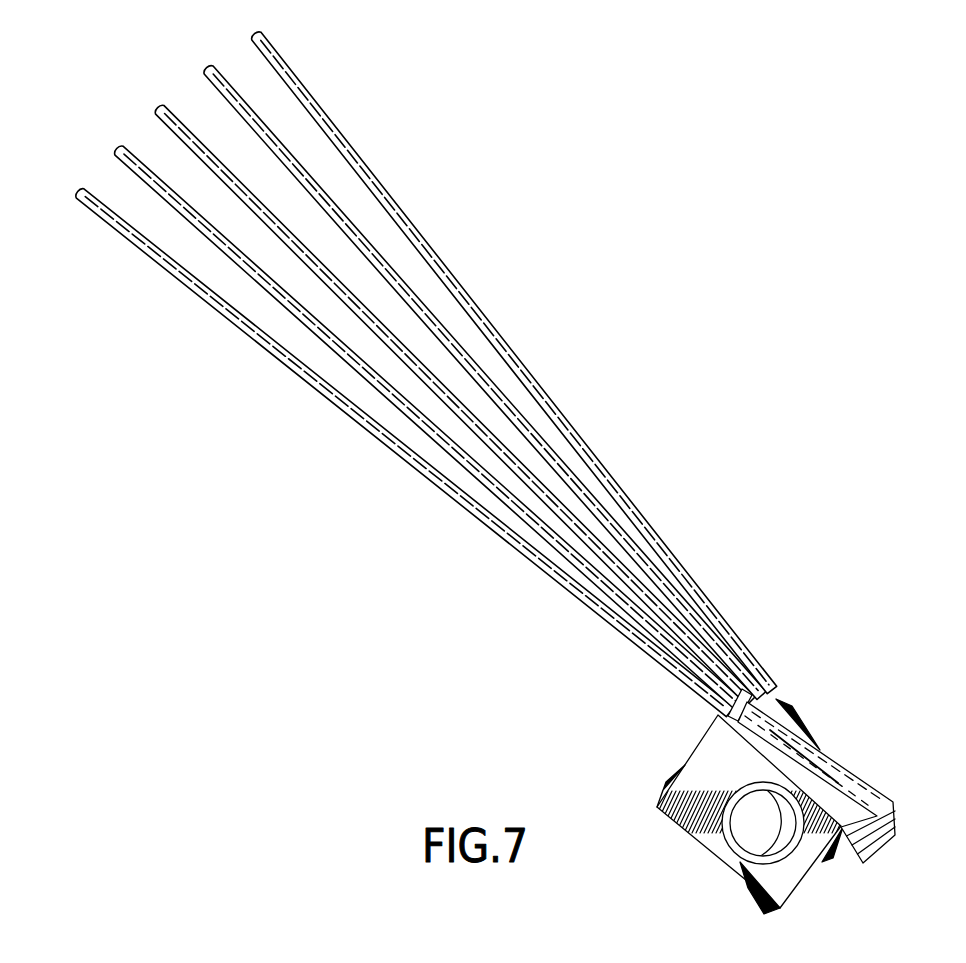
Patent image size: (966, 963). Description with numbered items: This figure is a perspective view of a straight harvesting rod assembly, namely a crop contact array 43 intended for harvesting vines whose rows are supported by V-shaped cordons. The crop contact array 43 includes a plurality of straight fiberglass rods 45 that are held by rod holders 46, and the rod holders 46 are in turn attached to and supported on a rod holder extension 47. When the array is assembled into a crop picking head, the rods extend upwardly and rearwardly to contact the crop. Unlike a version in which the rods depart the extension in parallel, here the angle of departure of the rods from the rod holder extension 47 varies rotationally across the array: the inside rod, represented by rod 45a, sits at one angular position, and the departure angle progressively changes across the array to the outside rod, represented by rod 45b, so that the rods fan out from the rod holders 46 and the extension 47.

The crop contact array 43 is at (575, 330).
The fiberglass rods 45 is at (162, 100).
The inside rod 45a is at (190, 294).
The outside rod 45b is at (363, 163).
The rod holders 46 is at (845, 767).
The rod holder extension 47 is at (740, 859).